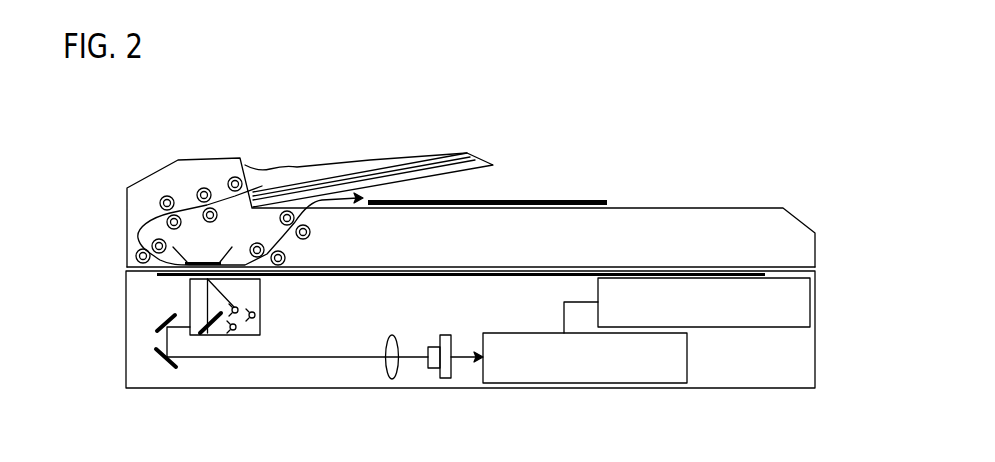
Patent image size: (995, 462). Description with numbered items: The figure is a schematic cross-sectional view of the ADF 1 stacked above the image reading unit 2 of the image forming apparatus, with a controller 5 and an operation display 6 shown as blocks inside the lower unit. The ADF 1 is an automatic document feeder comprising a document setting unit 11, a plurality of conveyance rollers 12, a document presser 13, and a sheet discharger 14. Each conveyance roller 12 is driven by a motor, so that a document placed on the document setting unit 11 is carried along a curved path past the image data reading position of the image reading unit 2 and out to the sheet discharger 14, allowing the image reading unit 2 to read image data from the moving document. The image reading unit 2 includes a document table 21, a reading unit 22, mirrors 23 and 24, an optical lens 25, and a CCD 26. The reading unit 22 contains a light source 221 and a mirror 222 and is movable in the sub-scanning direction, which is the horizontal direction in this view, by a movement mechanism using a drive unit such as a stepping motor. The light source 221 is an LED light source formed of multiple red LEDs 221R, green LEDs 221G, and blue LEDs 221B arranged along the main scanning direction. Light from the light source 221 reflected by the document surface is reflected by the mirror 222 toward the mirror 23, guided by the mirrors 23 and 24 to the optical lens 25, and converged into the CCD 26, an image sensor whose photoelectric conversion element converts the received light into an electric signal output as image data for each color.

The ADF 1 is at (125, 208).
The image reading unit 2 is at (126, 342).
The controller 5 is at (516, 332).
The operation display 6 is at (812, 298).
The document setting unit 11 is at (299, 167).
The conveyance rollers 12 is at (167, 196).
The document presser 13 is at (220, 256).
The sheet discharger 14 is at (628, 202).
The document table 21 is at (420, 277).
The reading unit 22 is at (190, 287).
The mirror 23 is at (162, 325).
The mirror 24 is at (168, 367).
The optical lens 25 is at (391, 382).
The CCD 26 is at (447, 382).
The light source 221 is at (287, 333).
The blue LEDs 221B is at (257, 315).
The green LEDs 221G is at (249, 321).
The red LEDs 221R is at (237, 330).
The mirror 222 is at (211, 337).